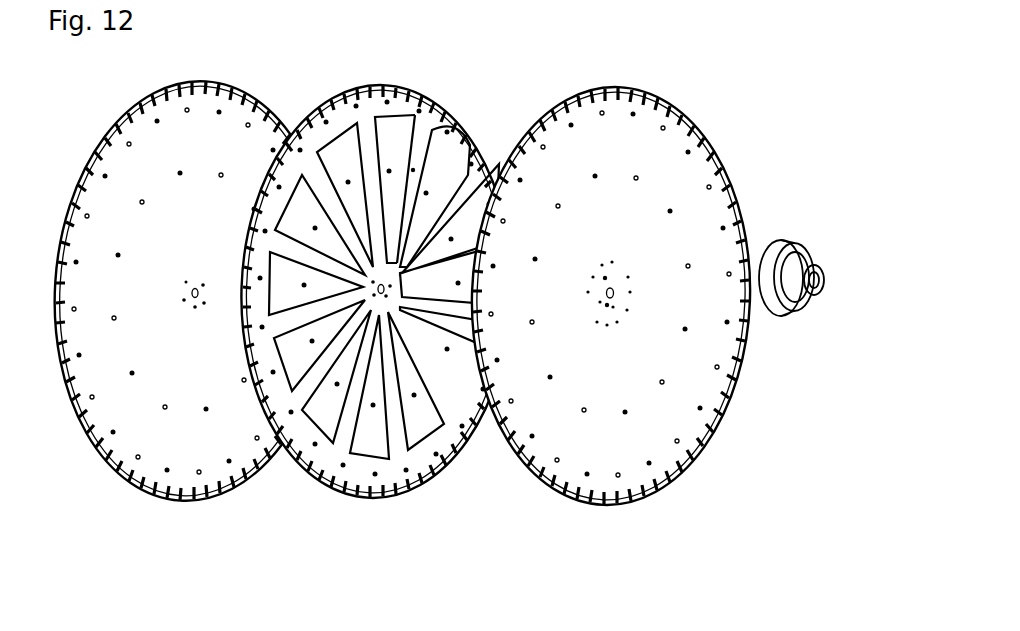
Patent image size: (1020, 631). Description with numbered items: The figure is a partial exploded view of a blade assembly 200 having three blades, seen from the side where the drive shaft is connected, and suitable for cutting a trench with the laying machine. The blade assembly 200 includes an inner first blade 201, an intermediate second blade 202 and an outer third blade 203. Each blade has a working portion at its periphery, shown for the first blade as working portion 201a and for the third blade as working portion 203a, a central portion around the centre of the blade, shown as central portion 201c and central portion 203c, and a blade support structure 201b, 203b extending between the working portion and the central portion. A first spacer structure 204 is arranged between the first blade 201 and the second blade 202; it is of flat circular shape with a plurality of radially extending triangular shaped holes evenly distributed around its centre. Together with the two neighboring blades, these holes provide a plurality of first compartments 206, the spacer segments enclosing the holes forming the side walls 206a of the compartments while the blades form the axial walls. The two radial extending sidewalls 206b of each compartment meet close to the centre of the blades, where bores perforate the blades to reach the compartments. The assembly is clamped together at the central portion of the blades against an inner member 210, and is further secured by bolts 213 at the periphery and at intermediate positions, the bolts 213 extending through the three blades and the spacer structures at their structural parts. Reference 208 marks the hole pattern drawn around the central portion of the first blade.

The blade assembly 200 is at (525, 535).
The first blade 201 is at (680, 486).
The working portion 201a is at (678, 437).
The blade support structure 201b is at (620, 210).
The central portion 201c is at (622, 292).
The second blade 202 is at (303, 490).
The third blade 203 is at (106, 486).
The working portion 203a is at (73, 347).
The blade support structure 203b is at (242, 177).
The central portion 203c is at (186, 288).
The first spacer structure 204 is at (475, 142).
The first compartments 206 is at (369, 442).
The side walls 206a is at (385, 178).
The radial extending sidewalls 206b is at (428, 432).
The holes 208 is at (628, 280).
The inner member 210 is at (770, 250).
The bolts 213 is at (413, 168).